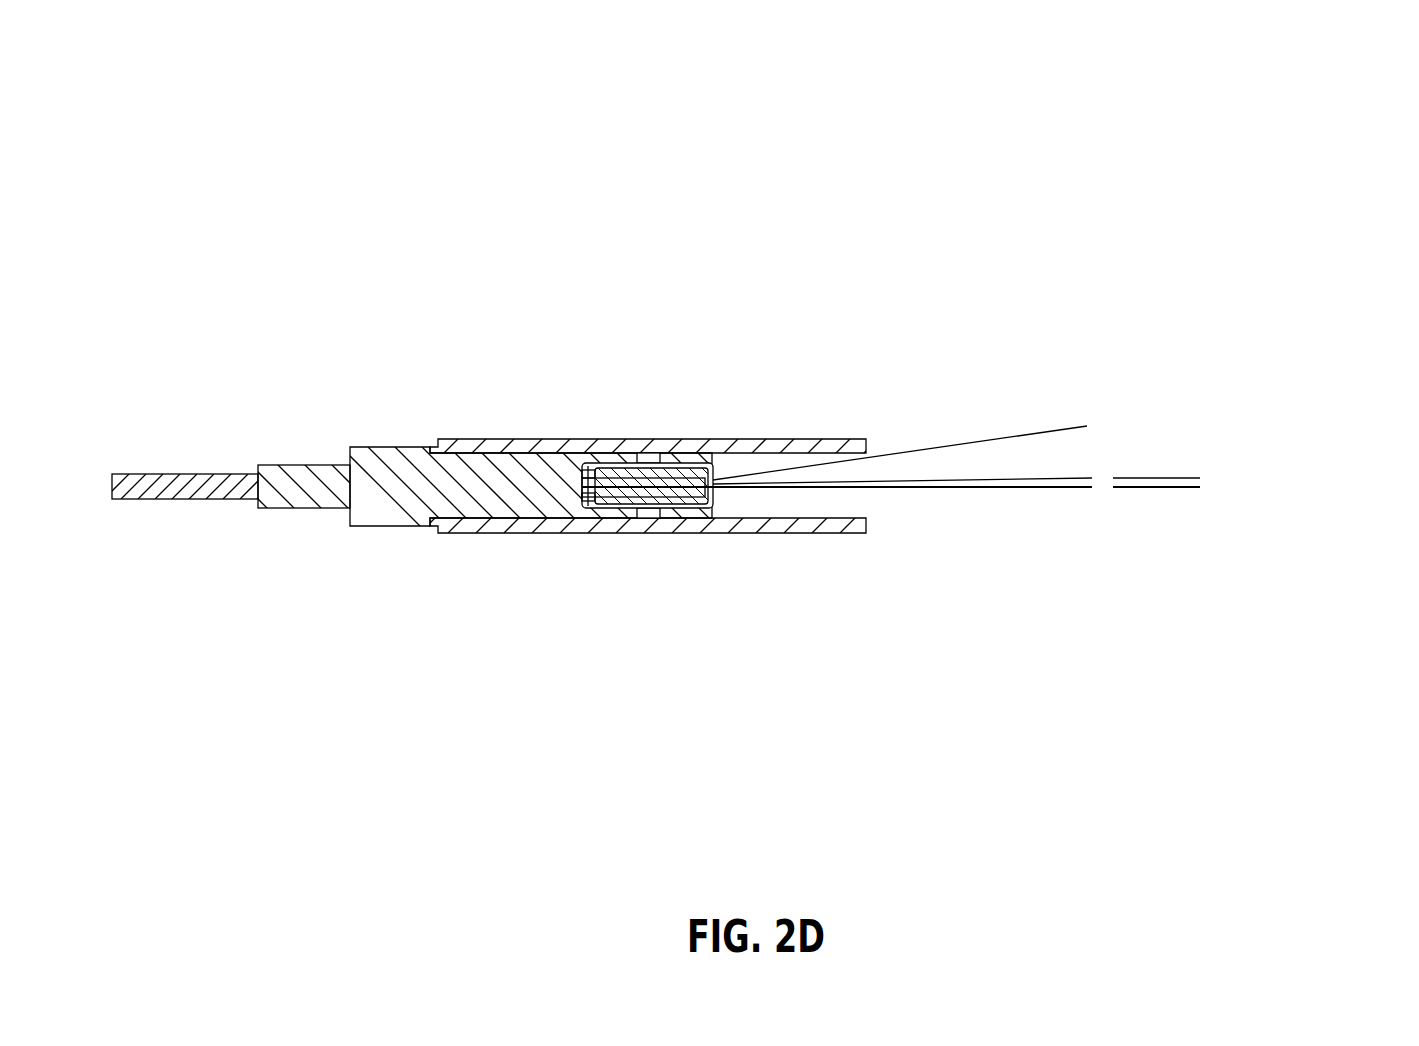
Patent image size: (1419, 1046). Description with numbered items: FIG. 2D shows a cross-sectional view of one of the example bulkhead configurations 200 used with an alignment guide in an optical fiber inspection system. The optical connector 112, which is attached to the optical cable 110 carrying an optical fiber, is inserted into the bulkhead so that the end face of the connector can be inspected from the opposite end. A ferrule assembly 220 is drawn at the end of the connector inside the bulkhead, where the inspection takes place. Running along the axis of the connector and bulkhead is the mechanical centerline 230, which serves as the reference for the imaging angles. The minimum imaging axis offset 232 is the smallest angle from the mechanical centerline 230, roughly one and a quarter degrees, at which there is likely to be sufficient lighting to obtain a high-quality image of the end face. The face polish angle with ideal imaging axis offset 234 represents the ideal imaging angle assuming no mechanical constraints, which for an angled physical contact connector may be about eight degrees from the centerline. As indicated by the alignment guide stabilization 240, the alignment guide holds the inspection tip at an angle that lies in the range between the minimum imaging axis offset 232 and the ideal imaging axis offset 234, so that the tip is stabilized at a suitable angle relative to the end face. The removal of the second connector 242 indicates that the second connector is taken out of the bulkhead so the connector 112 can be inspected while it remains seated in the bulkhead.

The bulkhead configurations 200 is at (205, 69).
The optical cable 110 is at (303, 509).
The optical connector 112 is at (388, 525).
The ferrule 220 is at (660, 472).
The mechanical centerline 230 is at (1003, 500).
The minimum imaging axis offset 232 is at (1267, 531).
The face polish angle with ideal imaging axis offset 234 is at (999, 425).
The alignment guide stabilization of the inspection tip 240 is at (1222, 228).
The removal of second connector 242 is at (735, 512).